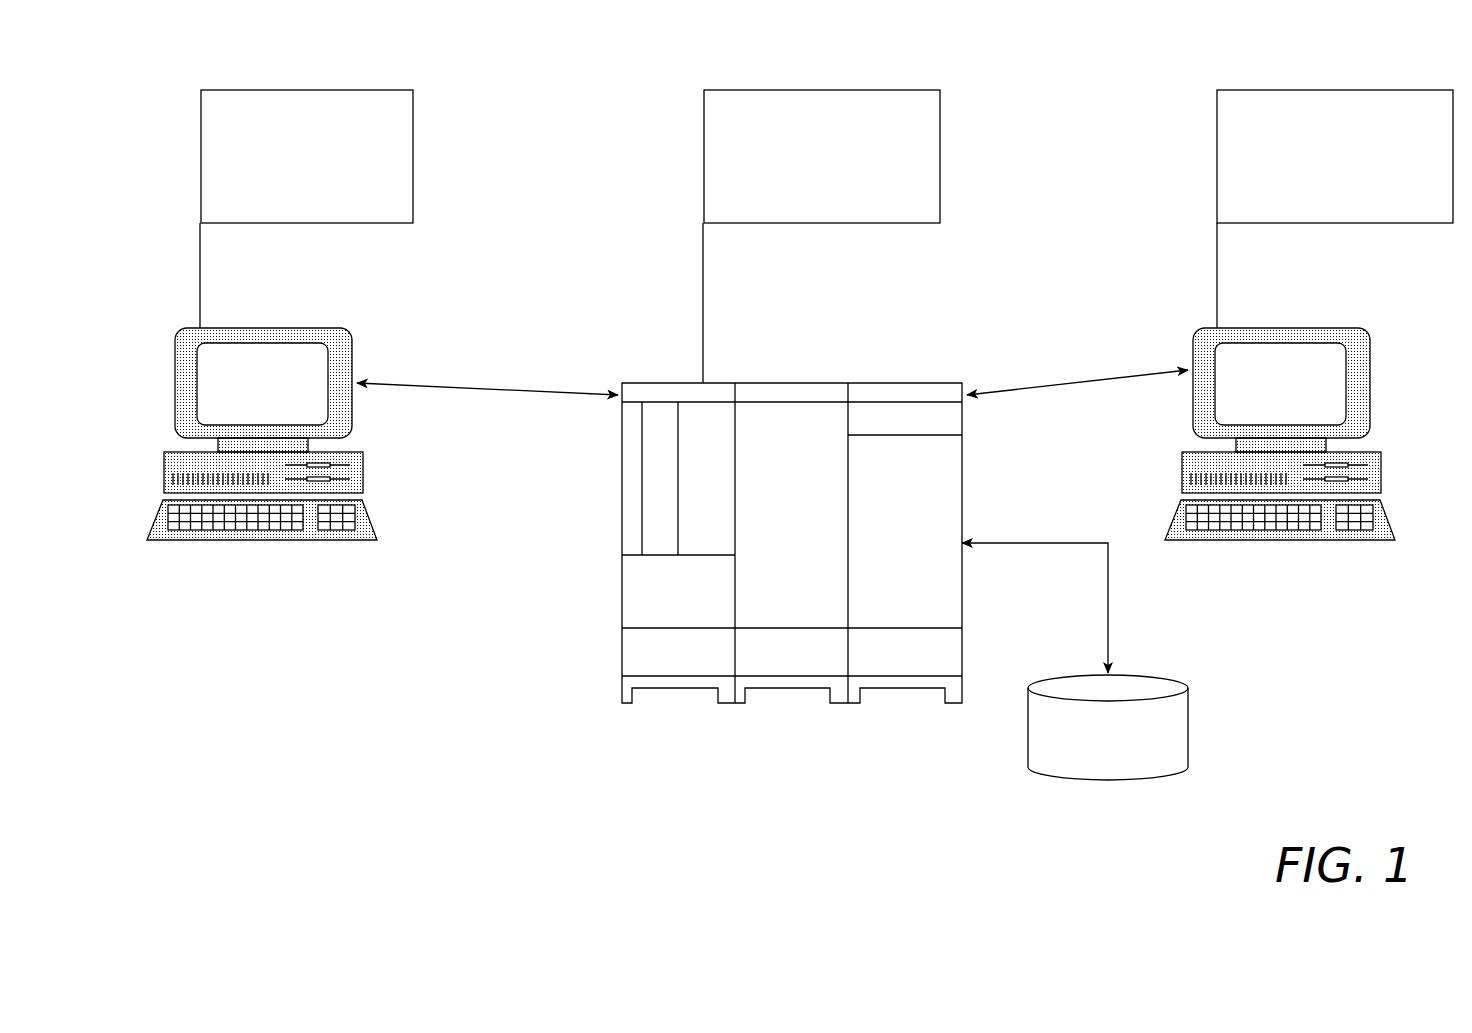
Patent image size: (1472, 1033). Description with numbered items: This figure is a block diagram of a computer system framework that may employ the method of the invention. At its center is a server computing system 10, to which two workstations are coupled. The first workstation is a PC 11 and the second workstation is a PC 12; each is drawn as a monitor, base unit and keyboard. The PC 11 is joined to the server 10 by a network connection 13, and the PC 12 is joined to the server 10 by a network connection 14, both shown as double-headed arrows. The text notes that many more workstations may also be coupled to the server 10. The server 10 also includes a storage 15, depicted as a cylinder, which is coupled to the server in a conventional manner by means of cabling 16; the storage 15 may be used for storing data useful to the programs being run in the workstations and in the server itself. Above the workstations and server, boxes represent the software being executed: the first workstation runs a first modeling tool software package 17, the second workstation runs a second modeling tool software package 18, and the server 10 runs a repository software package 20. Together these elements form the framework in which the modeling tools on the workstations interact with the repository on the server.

The server computing system 10 is at (962, 476).
The PC 11 is at (318, 328).
The PC 12 is at (1283, 328).
The network connection 13 is at (437, 382).
The network connection 14 is at (1083, 382).
The storage 15 is at (1187, 727).
The cabling 16 is at (1108, 620).
The modeling tool 1 software package 17 is at (413, 128).
The modeling tool 2 software package 18 is at (1217, 182).
The repository software package 20 is at (940, 128).